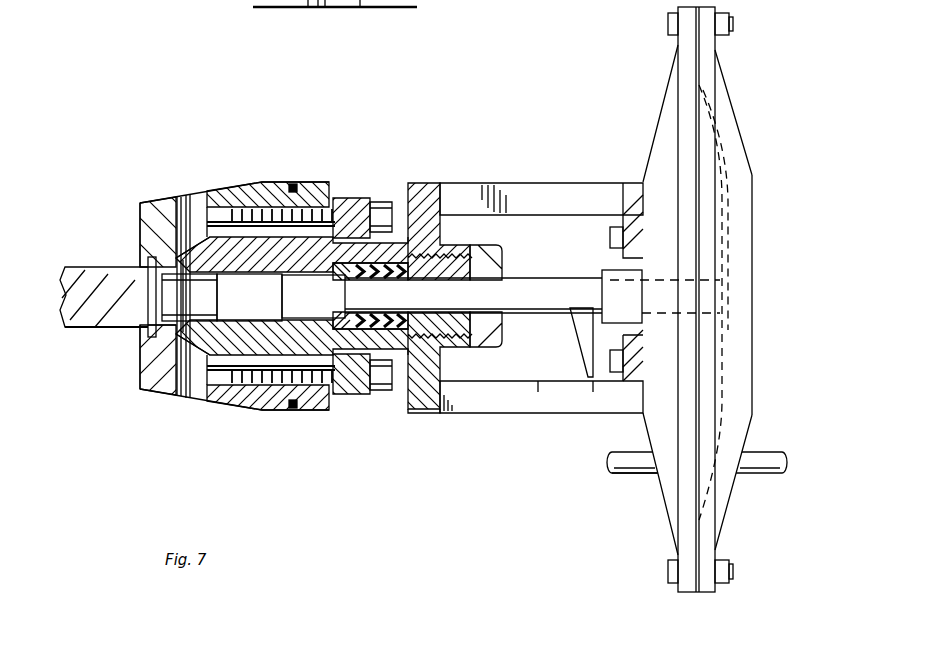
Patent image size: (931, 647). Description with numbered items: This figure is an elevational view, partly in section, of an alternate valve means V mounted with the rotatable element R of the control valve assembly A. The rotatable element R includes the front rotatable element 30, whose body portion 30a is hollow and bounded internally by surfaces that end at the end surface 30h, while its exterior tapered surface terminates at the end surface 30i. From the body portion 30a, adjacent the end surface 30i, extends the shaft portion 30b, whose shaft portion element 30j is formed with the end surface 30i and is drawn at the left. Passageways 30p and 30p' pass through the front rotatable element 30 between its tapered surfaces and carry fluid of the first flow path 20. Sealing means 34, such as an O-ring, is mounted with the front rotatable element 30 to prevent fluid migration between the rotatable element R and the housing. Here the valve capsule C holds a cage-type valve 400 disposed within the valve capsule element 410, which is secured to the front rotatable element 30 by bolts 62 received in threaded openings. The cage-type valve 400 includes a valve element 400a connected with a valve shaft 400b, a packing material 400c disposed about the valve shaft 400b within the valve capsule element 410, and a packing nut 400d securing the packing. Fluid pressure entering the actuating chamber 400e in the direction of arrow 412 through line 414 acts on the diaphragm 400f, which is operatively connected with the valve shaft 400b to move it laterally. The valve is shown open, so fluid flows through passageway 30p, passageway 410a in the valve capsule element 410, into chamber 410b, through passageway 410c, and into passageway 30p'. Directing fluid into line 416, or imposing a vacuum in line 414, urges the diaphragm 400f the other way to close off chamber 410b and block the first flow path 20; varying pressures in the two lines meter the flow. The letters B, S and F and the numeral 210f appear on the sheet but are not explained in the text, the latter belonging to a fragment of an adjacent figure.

The fragment of adjacent figure 210f is at (353, 8).
The front rotatable element 30 is at (153, 197).
The body portion 30a is at (135, 211).
The end surface 30i is at (137, 212).
The shaft portion 30b is at (86, 332).
The end surface 30h is at (158, 344).
The shaft portion element 30j is at (105, 304).
The passageway 30p is at (169, 272).
The passageway 30p' is at (170, 351).
The first flow path 20 is at (198, 192).
The passageway 410a is at (193, 255).
The chamber 410b is at (150, 284).
The passageway 410c is at (166, 393).
The sealing means 34 is at (295, 184).
The bolt 62 is at (381, 204).
The valve capsule element 410 is at (421, 421).
The cage-type valve 400 is at (747, 141).
The valve element 400a is at (275, 305).
The valve shaft 400b is at (466, 304).
The packing material 400c is at (363, 284).
The packing nut 400d is at (504, 259).
The actuating chamber 400e is at (757, 358).
The diaphragm 400f is at (727, 390).
The arrow 412 is at (599, 463).
The line 414 is at (620, 478).
The line 416 is at (765, 451).
The control valve assembly A is at (109, 125).
The collet nut B is at (277, 179).
The rotatable element R is at (241, 181).
The valve capsule C is at (197, 338).
The spring S is at (236, 392).
The frame F is at (568, 182).
The valve means V is at (757, 208).